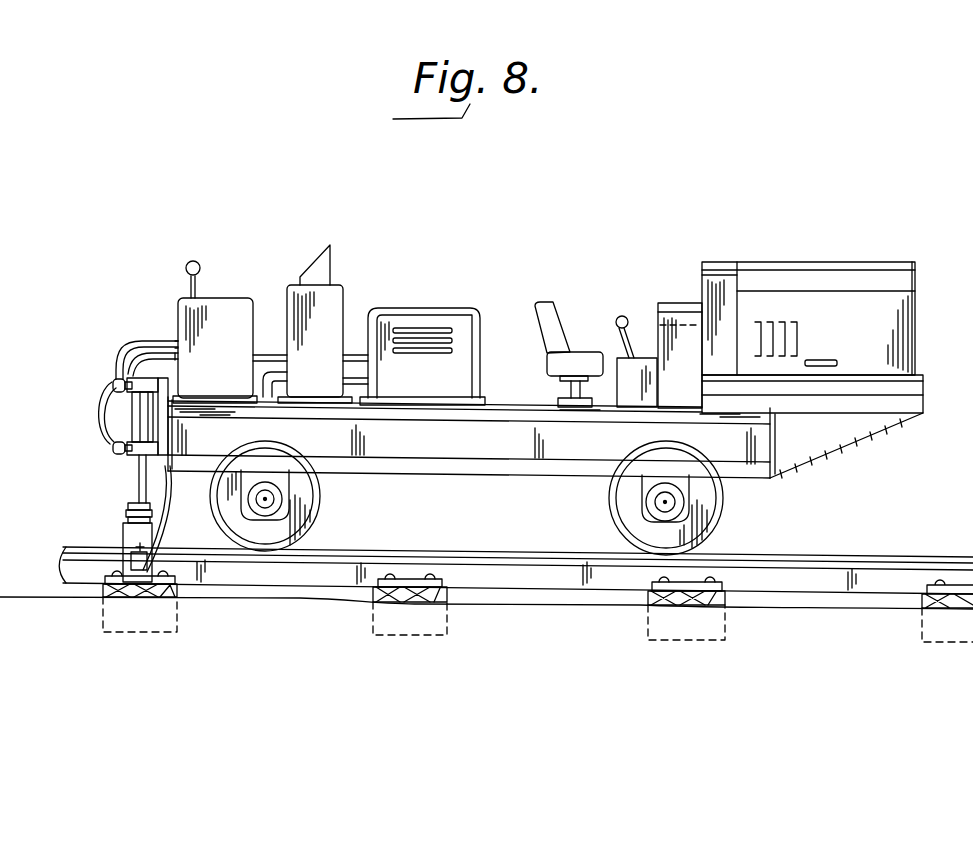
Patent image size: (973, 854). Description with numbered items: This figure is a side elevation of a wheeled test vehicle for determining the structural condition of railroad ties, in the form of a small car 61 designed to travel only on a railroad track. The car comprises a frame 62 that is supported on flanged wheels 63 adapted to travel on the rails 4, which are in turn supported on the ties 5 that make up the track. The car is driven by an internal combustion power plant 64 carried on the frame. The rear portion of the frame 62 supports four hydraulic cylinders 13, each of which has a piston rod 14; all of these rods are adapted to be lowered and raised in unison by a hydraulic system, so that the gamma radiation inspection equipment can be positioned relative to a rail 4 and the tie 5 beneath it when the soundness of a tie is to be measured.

The rails 4 is at (522, 568).
The ties 5 is at (177, 617).
The hydraulic cylinder 13 is at (137, 417).
The piston rod 14 is at (133, 480).
The small car 61 is at (506, 402).
The frame 62 is at (432, 462).
The flanged wheels 63 is at (307, 505).
The internal combustion power plant 64 is at (903, 328).